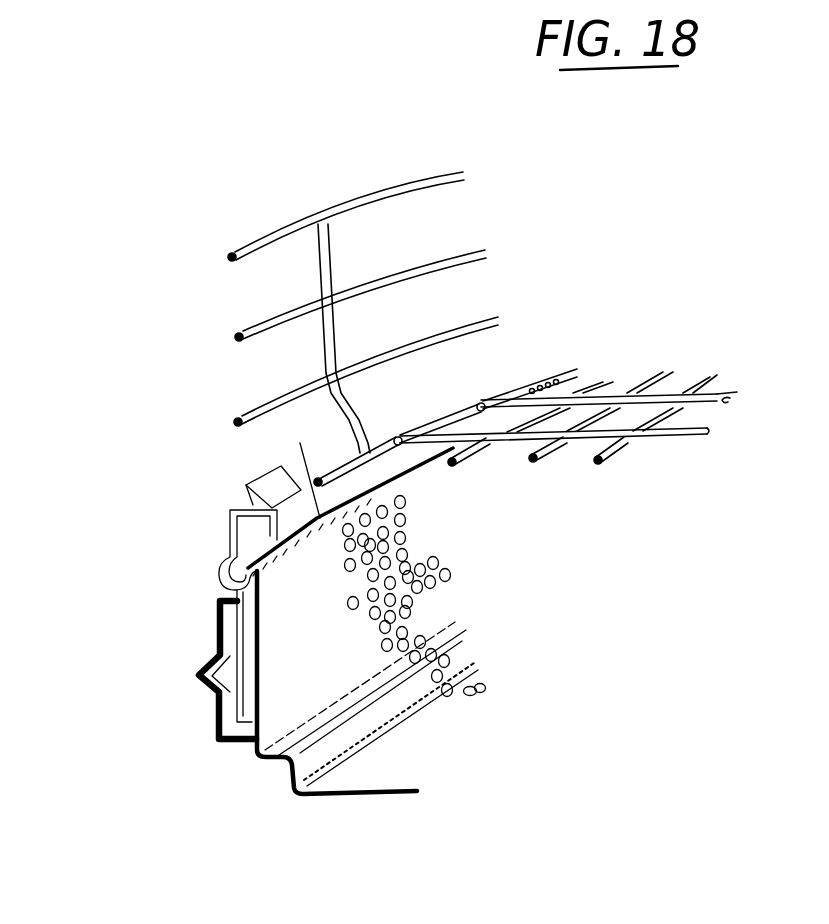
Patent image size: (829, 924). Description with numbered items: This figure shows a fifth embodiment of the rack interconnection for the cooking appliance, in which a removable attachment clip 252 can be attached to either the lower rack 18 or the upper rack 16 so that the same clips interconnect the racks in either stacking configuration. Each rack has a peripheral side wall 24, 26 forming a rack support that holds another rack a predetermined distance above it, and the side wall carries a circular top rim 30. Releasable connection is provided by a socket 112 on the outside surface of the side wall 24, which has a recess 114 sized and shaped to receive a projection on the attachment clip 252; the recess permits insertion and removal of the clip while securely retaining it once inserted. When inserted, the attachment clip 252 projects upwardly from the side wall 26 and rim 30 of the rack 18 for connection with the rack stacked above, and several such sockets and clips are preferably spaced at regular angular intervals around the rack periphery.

The upper rack 16 is at (348, 198).
The peripheral side wall 24 is at (312, 258).
The top rim 30 is at (314, 476).
The flange block 252 is at (228, 503).
The socket 112 is at (214, 630).
The recess 114 is at (194, 688).
The peripheral side wall 26 is at (253, 738).
The lower rack 18 is at (393, 797).